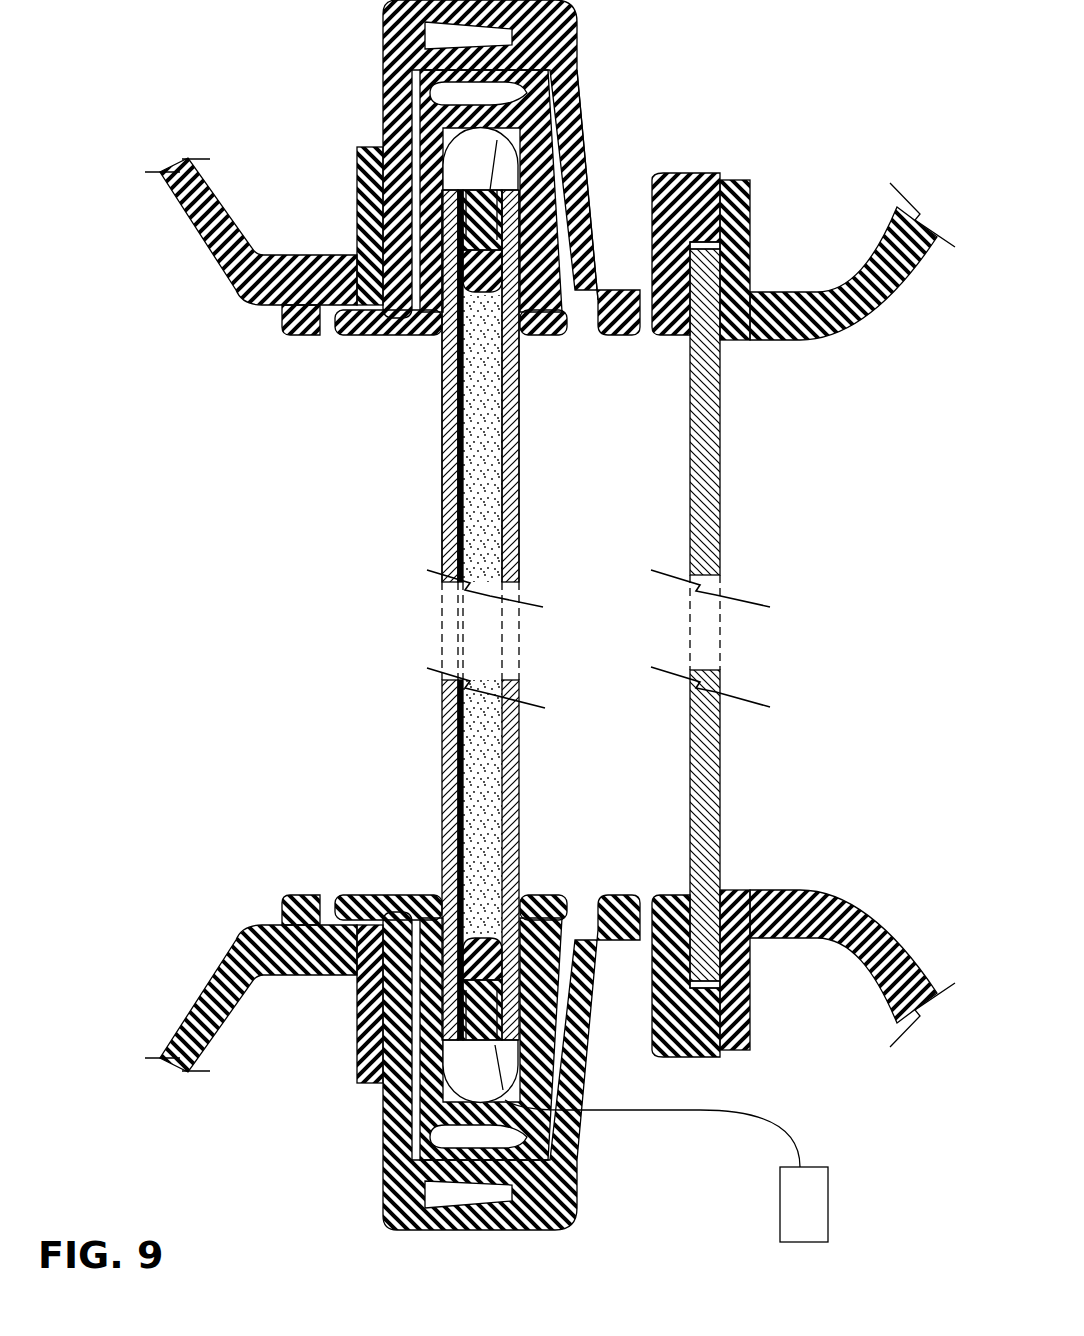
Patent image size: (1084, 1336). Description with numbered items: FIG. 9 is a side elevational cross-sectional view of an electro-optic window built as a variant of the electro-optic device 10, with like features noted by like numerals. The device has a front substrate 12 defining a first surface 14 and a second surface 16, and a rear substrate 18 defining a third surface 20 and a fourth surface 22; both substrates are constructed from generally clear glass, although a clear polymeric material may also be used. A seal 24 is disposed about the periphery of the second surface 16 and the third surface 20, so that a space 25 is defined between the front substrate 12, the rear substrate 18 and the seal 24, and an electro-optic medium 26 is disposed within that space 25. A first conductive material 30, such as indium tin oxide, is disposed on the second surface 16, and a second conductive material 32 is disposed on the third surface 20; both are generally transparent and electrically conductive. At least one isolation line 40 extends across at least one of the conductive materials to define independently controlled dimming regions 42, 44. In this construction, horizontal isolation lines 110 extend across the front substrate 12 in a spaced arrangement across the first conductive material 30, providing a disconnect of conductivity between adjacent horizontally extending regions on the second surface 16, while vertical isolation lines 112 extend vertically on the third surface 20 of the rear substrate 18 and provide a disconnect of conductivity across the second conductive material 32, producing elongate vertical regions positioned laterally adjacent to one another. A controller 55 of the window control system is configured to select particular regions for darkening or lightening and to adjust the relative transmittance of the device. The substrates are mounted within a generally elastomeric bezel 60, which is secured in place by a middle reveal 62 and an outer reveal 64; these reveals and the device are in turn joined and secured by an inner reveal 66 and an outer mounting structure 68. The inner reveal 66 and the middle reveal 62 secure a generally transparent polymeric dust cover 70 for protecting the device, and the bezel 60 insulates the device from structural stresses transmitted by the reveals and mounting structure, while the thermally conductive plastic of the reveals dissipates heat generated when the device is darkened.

The electro-optic device 10 is at (197, 427).
The front substrate 12 is at (513, 552).
The first surface 14 is at (518, 530).
The second surface 16 is at (505, 502).
The rear substrate 18 is at (448, 553).
The third surface 20 is at (453, 528).
The fourth surface 22 is at (442, 497).
The seal 24 is at (497, 177).
The space 25 is at (490, 816).
The electro-optic medium 26 is at (478, 735).
The first conductive material 30 is at (505, 433).
The second conductive material 32 is at (457, 440).
The isolation line 40 is at (442, 565).
The dimming region 42 is at (598, 805).
The dimming region 44 is at (590, 467).
The controller 55 is at (820, 1167).
The bezel 60 is at (548, 100).
The middle reveal 62 is at (593, 213).
The outer reveal 64 is at (383, 62).
The inner reveal 66 is at (748, 210).
The outer mounting structure 68 is at (218, 203).
The dust cover 70 is at (710, 526).
The horizontal isolation lines 110 is at (518, 335).
The vertical isolation lines 112 is at (450, 717).